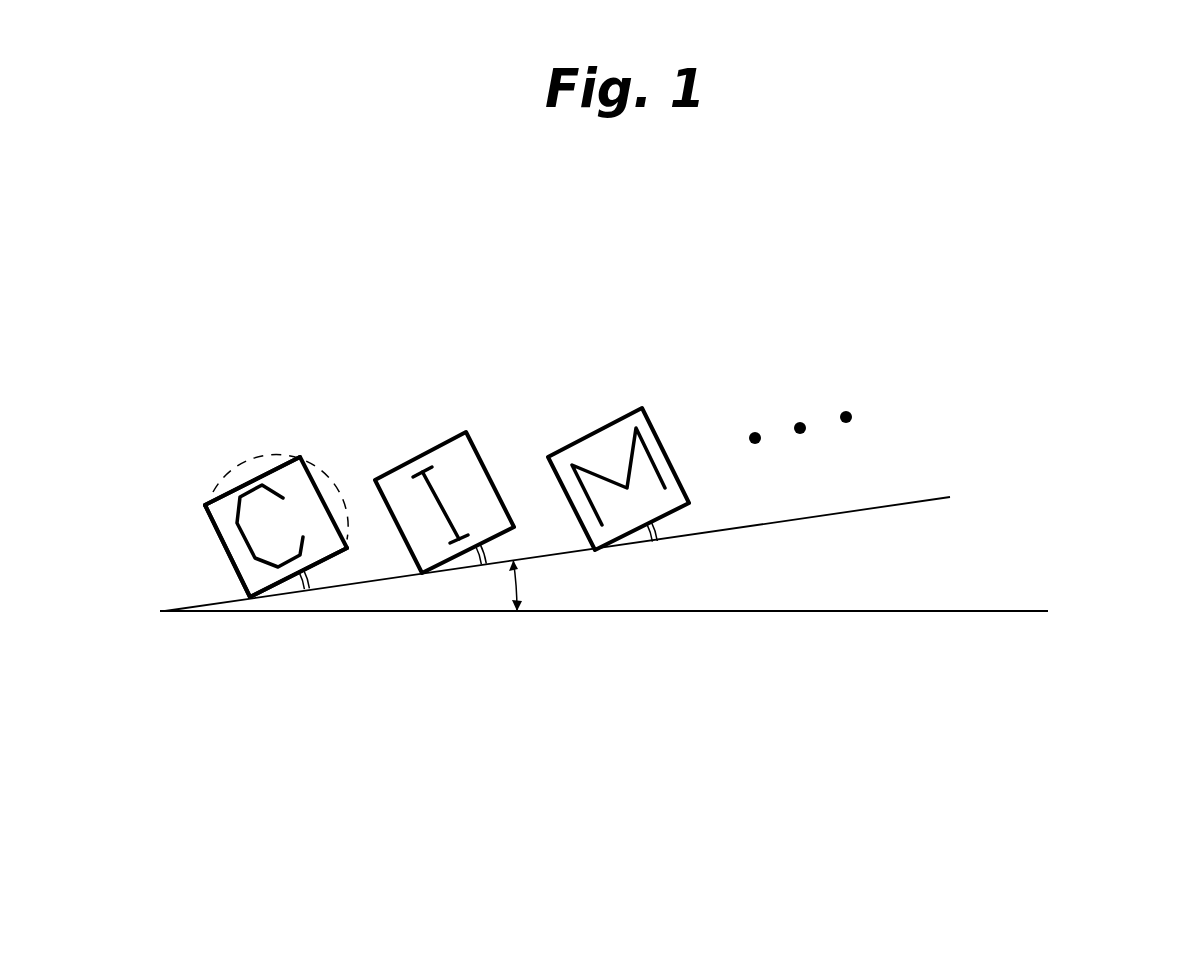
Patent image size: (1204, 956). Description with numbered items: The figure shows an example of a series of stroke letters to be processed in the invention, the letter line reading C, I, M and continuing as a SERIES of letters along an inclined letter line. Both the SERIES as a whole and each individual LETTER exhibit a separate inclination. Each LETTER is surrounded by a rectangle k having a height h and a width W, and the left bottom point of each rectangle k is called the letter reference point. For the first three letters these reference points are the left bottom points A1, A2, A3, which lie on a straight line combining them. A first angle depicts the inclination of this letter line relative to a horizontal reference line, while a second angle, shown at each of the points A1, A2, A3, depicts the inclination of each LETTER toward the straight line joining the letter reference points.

The rectangle k is at (212, 530).
The width W is at (252, 476).
The height h is at (323, 502).
The left bottom point A1 is at (247, 596).
The left bottom point A2 is at (417, 571).
The left bottom point A3 is at (589, 546).
The letter LETTER is at (475, 447).
The series of letters SERIES is at (1013, 369).